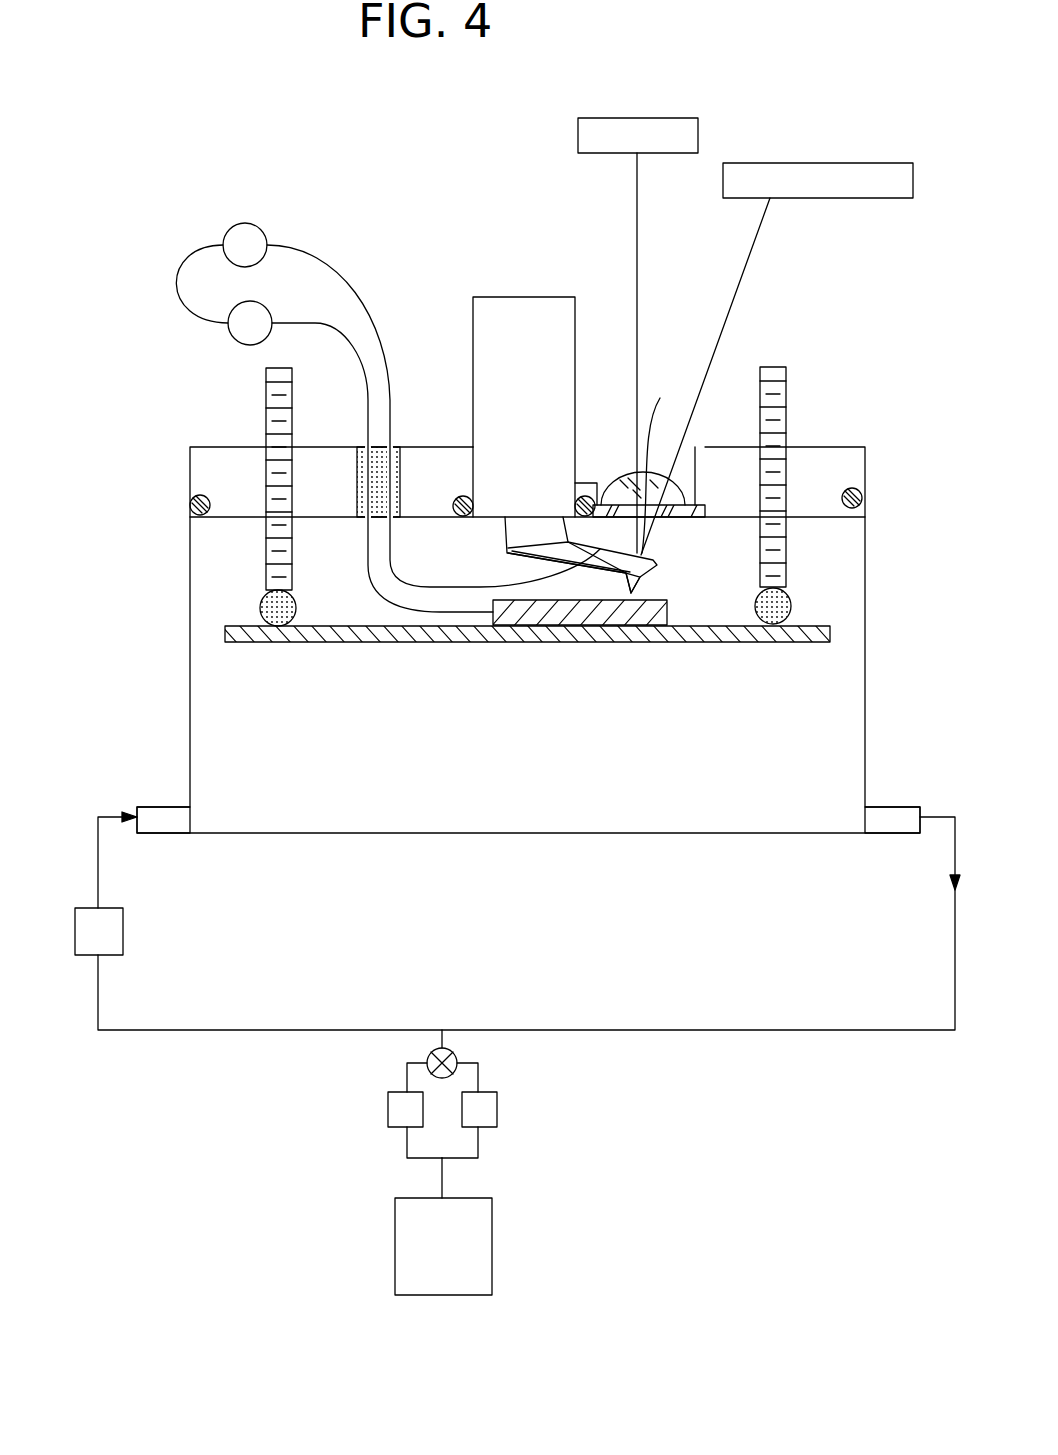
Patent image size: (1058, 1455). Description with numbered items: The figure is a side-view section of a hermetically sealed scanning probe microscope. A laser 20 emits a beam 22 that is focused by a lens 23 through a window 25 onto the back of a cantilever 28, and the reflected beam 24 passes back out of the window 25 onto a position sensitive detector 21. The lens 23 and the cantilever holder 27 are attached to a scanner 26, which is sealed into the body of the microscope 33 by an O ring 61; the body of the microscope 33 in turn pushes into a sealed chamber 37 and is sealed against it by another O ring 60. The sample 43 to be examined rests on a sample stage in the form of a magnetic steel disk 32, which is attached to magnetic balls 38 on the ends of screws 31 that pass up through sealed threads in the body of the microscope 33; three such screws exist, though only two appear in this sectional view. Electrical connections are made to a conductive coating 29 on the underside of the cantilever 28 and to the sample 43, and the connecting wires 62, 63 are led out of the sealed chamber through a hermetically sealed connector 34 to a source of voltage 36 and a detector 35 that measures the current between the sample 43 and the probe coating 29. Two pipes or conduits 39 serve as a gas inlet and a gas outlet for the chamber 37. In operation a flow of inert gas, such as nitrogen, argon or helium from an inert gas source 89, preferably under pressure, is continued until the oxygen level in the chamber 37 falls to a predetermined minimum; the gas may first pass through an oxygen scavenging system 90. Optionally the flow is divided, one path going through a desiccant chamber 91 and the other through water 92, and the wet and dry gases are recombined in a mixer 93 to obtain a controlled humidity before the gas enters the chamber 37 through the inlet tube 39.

The laser 20 is at (645, 118).
The position sensitive detector 21 is at (815, 163).
The beam 22 is at (638, 268).
The lens 23 is at (660, 462).
The reflected beam 24 is at (748, 268).
The window 25 is at (695, 447).
The scanner 26 is at (520, 297).
The cantilever holder 27 is at (508, 528).
The cantilever 28 is at (640, 558).
The conductive coating 29 is at (642, 578).
The screws 31 is at (265, 572).
The magnetic steel disk 32 is at (400, 643).
The body of the microscope 33 is at (820, 447).
The hermetically sealed connector 34 is at (400, 447).
The detector 35 is at (241, 222).
The source of voltage 36 is at (242, 345).
The sealed chamber 37 is at (866, 742).
The magnetic balls 38 is at (260, 612).
The pipes or conduits 39 is at (165, 822).
The sample 43 is at (540, 614).
The O ring 60 is at (190, 506).
The O ring 61 is at (580, 496).
The connecting wire 62 is at (316, 328).
The connecting wire 63 is at (333, 258).
The inert gas source 89 is at (492, 1215).
The oxygen scavenging system 90 is at (123, 932).
The desiccant chamber 91 is at (388, 1108).
The water 92 is at (497, 1108).
The mixer 93 is at (427, 1057).